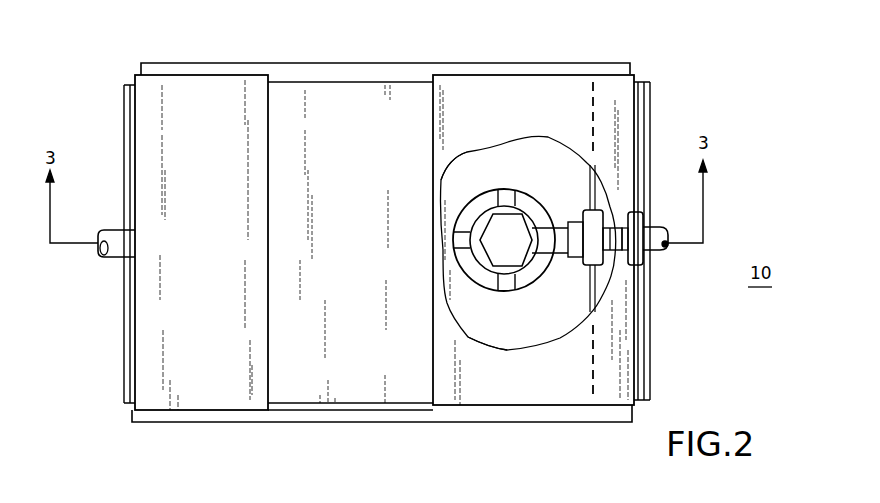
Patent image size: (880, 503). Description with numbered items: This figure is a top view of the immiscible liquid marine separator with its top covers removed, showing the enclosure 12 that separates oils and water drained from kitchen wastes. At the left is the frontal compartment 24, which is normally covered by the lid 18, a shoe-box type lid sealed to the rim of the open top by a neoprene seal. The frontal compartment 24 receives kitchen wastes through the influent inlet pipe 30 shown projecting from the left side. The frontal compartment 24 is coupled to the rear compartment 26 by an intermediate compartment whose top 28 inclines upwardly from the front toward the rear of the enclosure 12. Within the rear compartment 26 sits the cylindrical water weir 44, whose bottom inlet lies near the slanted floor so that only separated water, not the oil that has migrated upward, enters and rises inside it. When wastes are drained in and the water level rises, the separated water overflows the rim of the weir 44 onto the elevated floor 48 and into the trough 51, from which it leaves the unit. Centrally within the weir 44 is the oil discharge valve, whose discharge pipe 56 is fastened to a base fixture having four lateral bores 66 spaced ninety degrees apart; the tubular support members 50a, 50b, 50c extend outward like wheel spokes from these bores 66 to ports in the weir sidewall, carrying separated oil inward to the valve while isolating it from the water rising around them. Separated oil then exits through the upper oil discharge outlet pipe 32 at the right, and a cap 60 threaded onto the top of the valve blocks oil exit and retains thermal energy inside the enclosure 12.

The enclosure 12 is at (375, 78).
The lid 18 is at (220, 88).
The frontal compartment 24 is at (205, 412).
The rear compartment 26 is at (522, 407).
The top 28 is at (362, 170).
The influent inlet pipe 30 is at (110, 228).
The oil discharge outlet pipe 32 is at (660, 225).
The cylindrical water weir 44 is at (473, 282).
The elevated floor 48 is at (492, 120).
The tubular support member 50a is at (505, 198).
The tubular support member 50b is at (468, 227).
The tubular support member 50c is at (500, 293).
The trough 51 is at (595, 147).
The discharge pipe 56 is at (553, 262).
The cap 60 is at (505, 240).
The lateral bore 66 is at (527, 203).